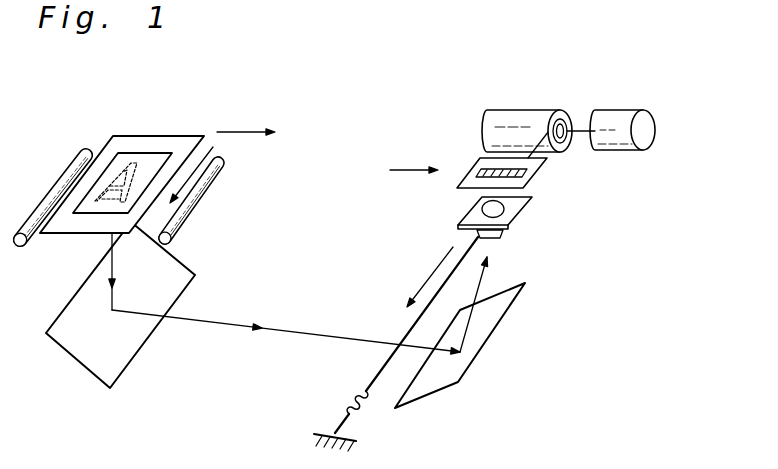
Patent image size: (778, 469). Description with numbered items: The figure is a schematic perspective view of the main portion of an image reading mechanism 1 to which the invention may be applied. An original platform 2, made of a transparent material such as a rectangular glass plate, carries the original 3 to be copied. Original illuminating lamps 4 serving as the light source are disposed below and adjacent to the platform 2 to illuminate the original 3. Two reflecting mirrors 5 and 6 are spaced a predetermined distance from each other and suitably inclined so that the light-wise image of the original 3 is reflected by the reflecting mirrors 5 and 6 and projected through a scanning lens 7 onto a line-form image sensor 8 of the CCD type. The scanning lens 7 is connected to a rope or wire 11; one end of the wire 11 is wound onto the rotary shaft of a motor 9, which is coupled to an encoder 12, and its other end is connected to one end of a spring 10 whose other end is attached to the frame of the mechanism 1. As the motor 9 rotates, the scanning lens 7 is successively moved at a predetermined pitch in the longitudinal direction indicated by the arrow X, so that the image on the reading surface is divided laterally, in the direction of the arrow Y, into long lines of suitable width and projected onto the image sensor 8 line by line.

The image reading mechanism 1 is at (347, 236).
The original platform 2 is at (122, 149).
The original 3 is at (128, 153).
The original illuminating lamps 4 is at (56, 183).
The reflecting mirror 5 is at (63, 350).
The reflecting mirror 6 is at (500, 322).
The scanning lens 7 is at (520, 217).
The line-form image sensor 8 is at (539, 168).
The motor 9 is at (523, 120).
The spring 10 is at (348, 404).
The rope or wire 11 is at (384, 362).
The encoder 12 is at (627, 140).